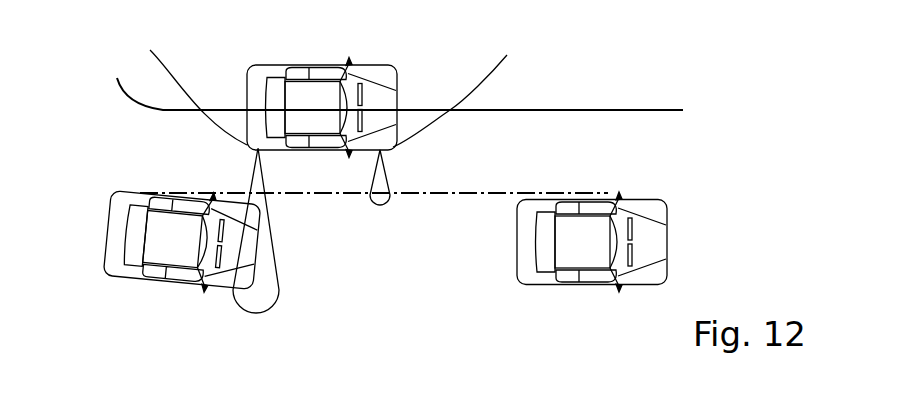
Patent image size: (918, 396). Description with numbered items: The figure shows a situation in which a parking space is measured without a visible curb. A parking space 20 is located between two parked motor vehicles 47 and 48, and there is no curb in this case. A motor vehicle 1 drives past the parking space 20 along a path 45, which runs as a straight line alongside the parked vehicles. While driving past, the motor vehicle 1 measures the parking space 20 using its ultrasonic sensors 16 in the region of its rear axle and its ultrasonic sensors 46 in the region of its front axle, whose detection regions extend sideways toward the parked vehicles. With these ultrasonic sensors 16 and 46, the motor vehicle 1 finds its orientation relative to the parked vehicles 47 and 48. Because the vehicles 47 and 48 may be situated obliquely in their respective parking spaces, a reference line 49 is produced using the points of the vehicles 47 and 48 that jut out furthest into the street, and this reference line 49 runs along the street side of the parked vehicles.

The motor vehicle 1 is at (280, 65).
The ultrasonic sensors 16 is at (187, 80).
The parking space 20 is at (362, 260).
The path 45 is at (580, 110).
The ultrasonic sensors 46 is at (461, 81).
The motor vehicle 47 is at (140, 198).
The motor vehicle 48 is at (657, 240).
The reference line 49 is at (428, 193).